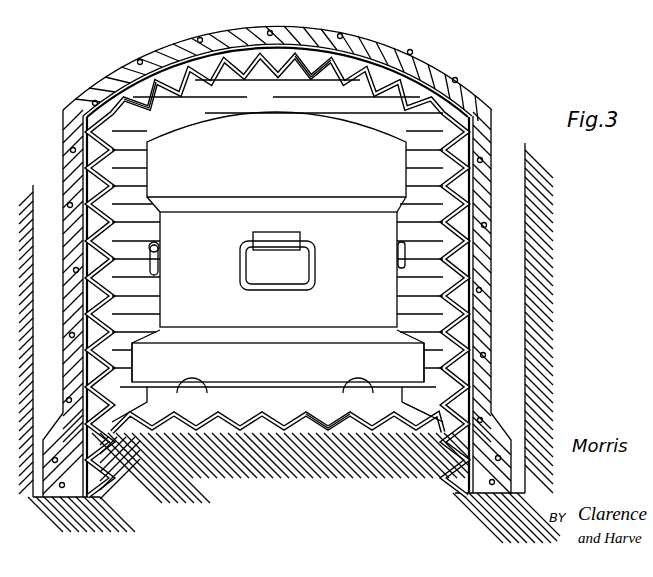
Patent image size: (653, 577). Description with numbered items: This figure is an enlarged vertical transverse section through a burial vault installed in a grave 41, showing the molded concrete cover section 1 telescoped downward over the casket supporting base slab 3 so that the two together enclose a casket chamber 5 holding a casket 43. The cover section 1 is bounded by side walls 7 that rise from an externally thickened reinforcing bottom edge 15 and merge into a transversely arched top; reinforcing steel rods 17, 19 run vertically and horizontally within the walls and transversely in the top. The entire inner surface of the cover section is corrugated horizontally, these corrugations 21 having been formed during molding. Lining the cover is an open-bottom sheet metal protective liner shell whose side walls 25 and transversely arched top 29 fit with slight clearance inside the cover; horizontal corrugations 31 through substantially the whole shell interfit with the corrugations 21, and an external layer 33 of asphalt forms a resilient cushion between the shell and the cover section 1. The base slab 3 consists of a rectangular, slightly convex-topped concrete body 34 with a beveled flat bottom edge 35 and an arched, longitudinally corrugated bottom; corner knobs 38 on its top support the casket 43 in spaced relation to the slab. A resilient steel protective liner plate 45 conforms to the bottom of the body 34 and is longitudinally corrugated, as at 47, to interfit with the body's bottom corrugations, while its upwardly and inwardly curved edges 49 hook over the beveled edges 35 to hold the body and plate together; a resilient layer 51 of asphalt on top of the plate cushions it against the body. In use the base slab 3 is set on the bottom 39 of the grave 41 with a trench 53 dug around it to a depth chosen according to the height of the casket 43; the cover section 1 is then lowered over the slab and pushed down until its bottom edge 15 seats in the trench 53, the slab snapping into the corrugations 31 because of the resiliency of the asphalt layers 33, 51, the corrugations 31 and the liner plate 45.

The cover section 1 is at (450, 66).
The base slab 3 is at (261, 392).
The casket chamber 5 is at (276, 93).
The side walls 7 is at (63, 128).
The bottom edge 15 is at (67, 490).
The reinforcing steel rods 17 is at (279, 50).
The reinforcing steel rods 19 is at (373, 62).
The corrugations 21 is at (204, 60).
The side walls of liner shell 25 is at (110, 209).
The arched top of liner shell 29 is at (190, 93).
The corrugations of liner shell 31 is at (347, 72).
The layer of asphalt 33 is at (142, 82).
The concrete body 34 is at (306, 412).
The beveled flat bottom edge 35 is at (142, 400).
The corner knobs 38 is at (191, 388).
The bottom of grave 39 is at (343, 436).
The grave 41 is at (507, 182).
The casket 43 is at (276, 219).
The protective liner plate 45 is at (185, 440).
The corrugations of liner plate 47 is at (222, 416).
The curved edges 49 is at (453, 423).
The resilient layer of asphalt 51 is at (323, 424).
The trench 53 is at (517, 467).